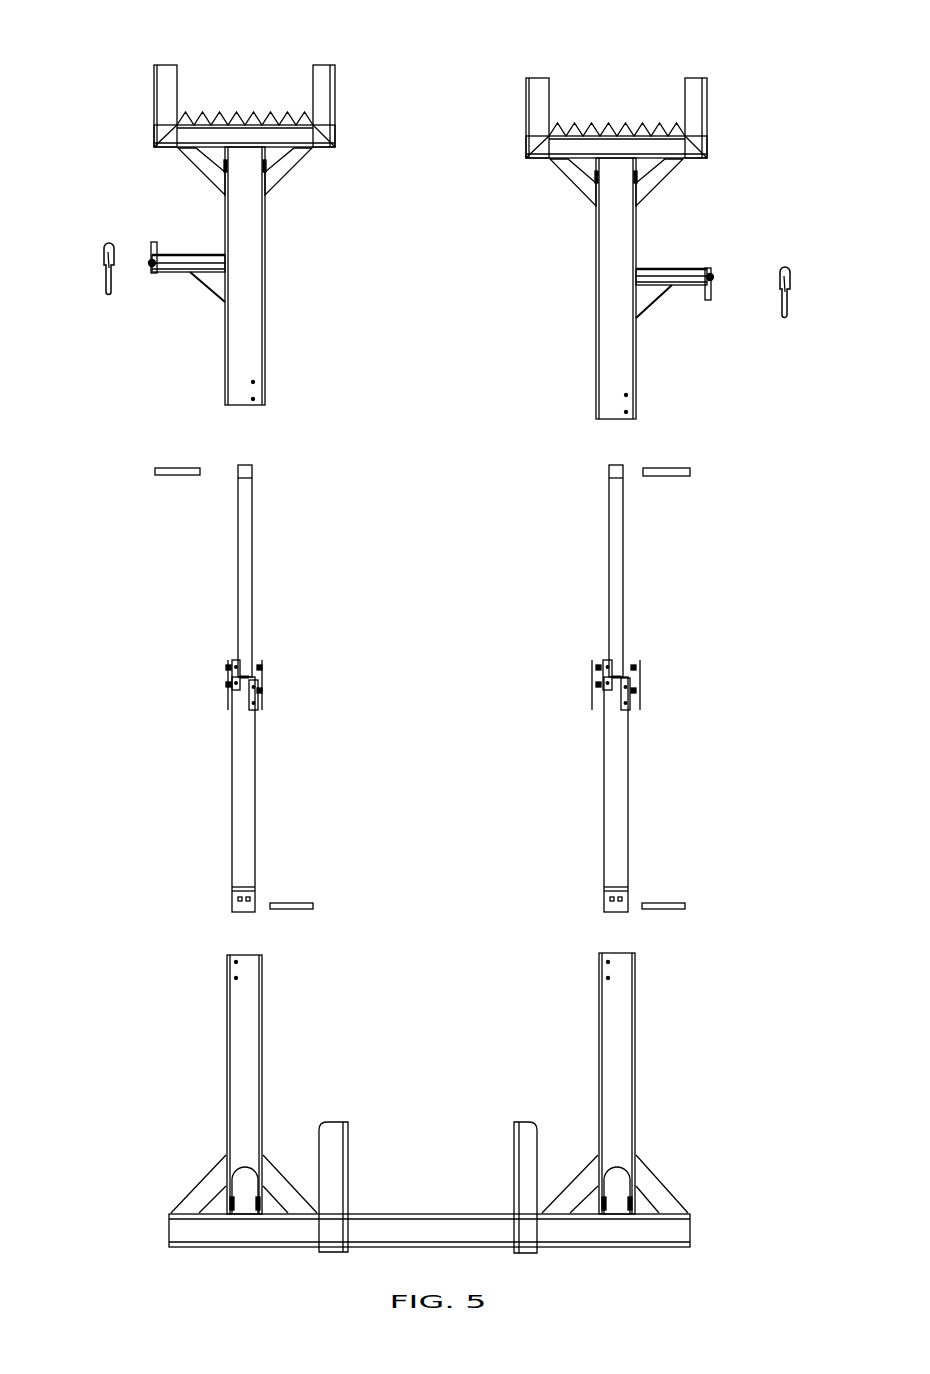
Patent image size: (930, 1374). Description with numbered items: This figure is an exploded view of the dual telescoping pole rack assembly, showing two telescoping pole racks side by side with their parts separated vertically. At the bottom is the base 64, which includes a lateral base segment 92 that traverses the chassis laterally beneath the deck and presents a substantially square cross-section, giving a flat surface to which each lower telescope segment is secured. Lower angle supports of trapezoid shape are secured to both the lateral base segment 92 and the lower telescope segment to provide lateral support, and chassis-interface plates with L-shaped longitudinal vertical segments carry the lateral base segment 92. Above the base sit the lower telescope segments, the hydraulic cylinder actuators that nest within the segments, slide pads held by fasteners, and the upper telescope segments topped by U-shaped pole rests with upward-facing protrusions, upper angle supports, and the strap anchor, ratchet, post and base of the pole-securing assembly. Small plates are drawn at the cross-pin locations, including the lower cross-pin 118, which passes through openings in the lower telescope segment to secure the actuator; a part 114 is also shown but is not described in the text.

The base 64 is at (429, 1224).
The lateral base segment 92 is at (433, 1230).
The spacer plate 114 is at (180, 468).
The lower cross-pin 118 is at (120, 476).